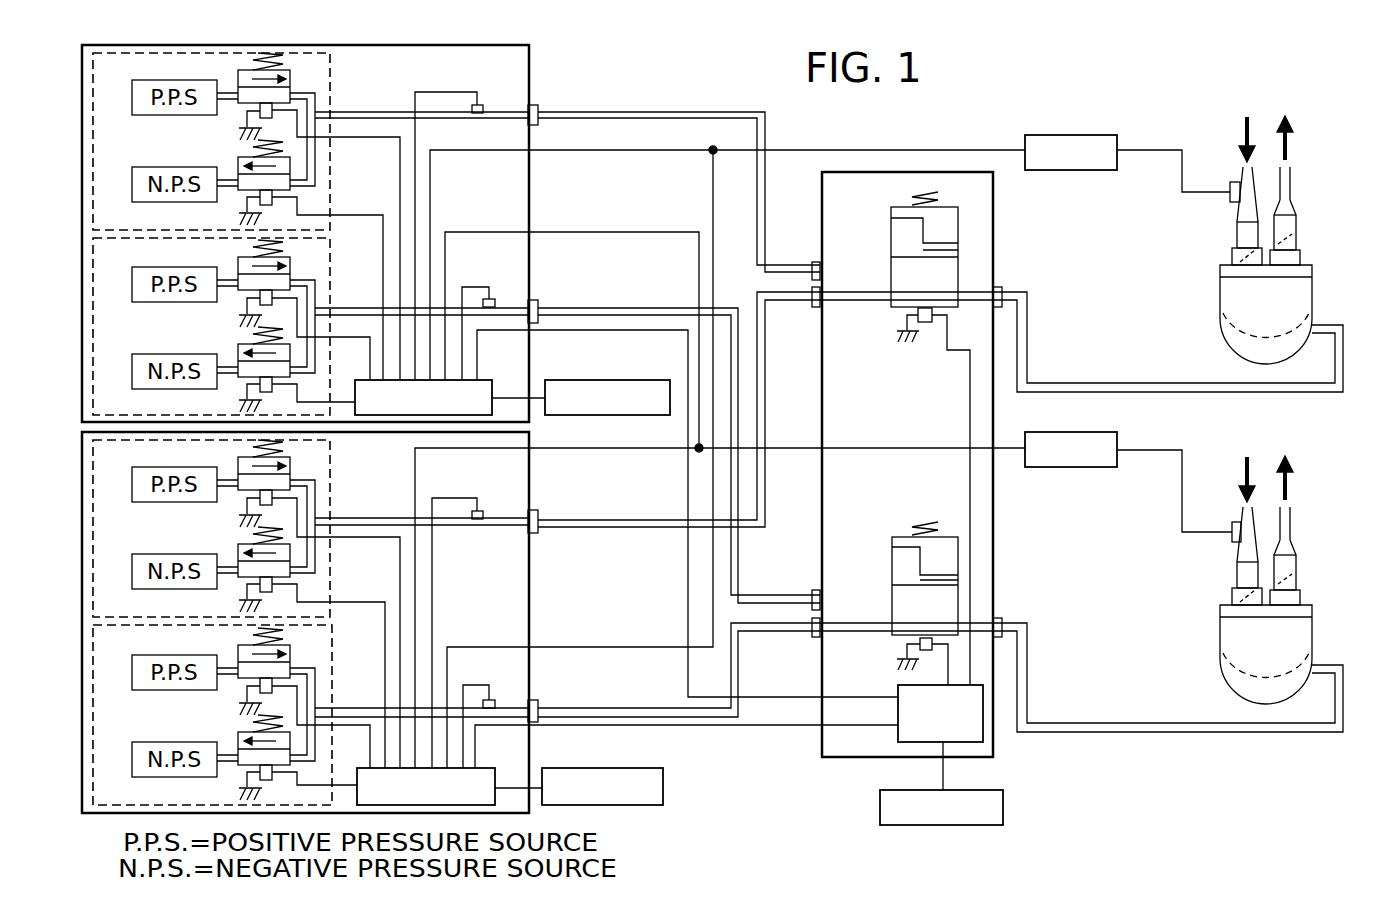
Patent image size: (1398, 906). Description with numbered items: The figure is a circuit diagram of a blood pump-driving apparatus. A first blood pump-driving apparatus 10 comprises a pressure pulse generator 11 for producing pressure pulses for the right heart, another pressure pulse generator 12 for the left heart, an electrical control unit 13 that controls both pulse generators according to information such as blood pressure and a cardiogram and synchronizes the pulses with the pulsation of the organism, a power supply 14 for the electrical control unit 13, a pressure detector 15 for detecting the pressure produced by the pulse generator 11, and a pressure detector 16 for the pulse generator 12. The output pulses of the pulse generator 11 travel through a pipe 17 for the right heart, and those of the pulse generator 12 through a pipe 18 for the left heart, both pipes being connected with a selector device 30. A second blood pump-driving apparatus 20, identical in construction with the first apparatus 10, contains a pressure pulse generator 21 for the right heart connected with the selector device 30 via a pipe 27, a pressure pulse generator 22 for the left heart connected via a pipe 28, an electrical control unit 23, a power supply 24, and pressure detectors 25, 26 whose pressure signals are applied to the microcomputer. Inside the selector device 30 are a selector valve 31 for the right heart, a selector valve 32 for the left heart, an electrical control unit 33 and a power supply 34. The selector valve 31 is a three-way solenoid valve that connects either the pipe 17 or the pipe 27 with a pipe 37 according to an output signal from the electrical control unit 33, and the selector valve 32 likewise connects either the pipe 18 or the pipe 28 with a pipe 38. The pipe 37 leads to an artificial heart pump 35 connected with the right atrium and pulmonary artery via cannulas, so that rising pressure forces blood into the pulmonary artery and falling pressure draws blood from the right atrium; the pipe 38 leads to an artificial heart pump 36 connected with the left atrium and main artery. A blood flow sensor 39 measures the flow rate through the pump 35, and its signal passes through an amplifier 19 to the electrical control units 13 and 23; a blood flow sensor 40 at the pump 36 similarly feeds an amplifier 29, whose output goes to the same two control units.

The first blood pump-driving apparatus 10 is at (529, 83).
The pressure pulse generator 11 is at (330, 97).
The pressure pulse generator 12 is at (330, 283).
The electrical control unit 13 is at (492, 390).
The power supply 14 is at (596, 380).
The pressure detector 15 is at (483, 106).
The pressure detector 16 is at (495, 300).
The pipe 17 is at (614, 112).
The pipe 18 is at (614, 308).
The amplifier 19 is at (1058, 135).
The second blood pump-driving apparatus 20 is at (529, 490).
The pressure pulse generator 21 is at (330, 487).
The pressure pulse generator 22 is at (332, 673).
The electrical control unit 23 is at (495, 778).
The power supply 24 is at (660, 768).
The pressure detector 25 is at (483, 511).
The pressure detector 26 is at (495, 700).
The pipe 27 is at (614, 518).
The pipe 28 is at (594, 708).
The amplifier 29 is at (1078, 467).
The selector device 30 is at (993, 238).
The selector valve 31 is at (891, 248).
The selector valve 32 is at (892, 565).
The electrical control unit 33 is at (898, 690).
The power supply 34 is at (1003, 792).
The artificial heart pump 35 is at (1312, 303).
The artificial heart pump 36 is at (1312, 643).
The pipe 37 is at (1097, 383).
The pipe 38 is at (1117, 723).
The blood flow sensor 39 is at (1233, 202).
The blood flow sensor 40 is at (1233, 542).